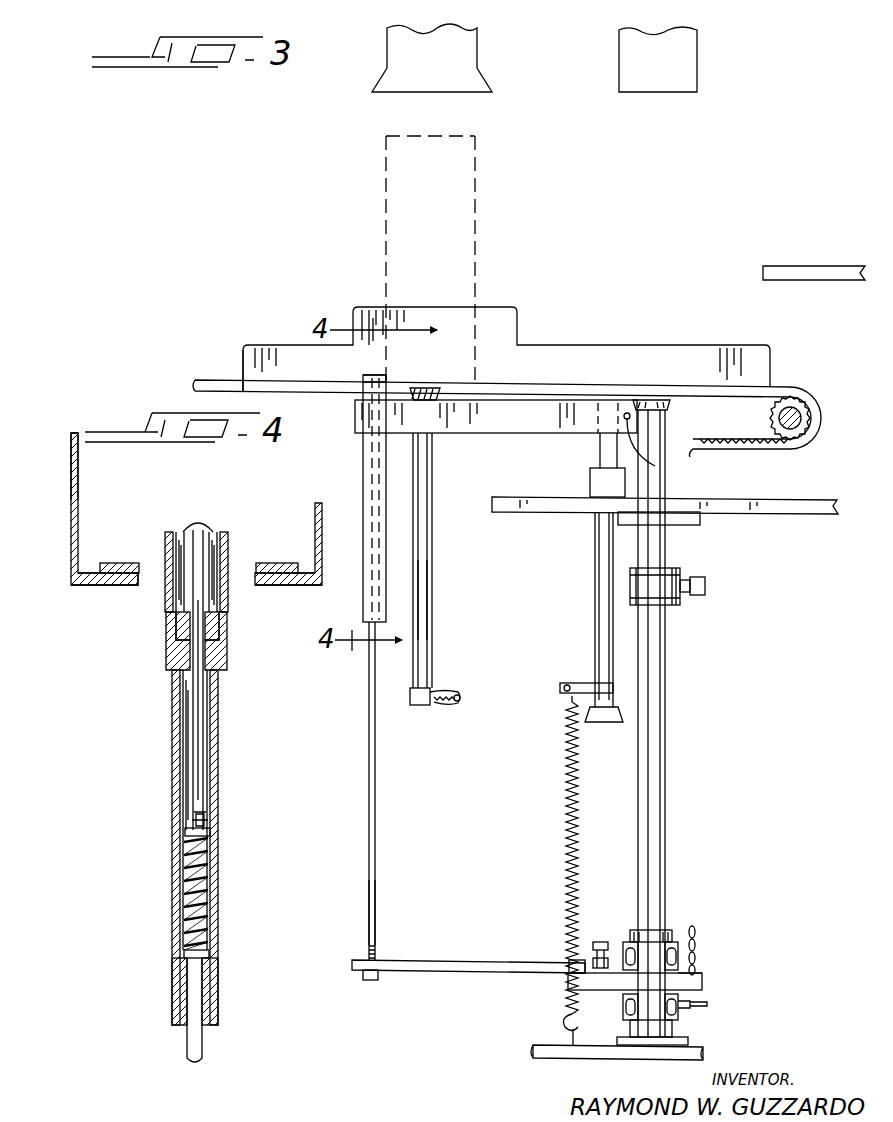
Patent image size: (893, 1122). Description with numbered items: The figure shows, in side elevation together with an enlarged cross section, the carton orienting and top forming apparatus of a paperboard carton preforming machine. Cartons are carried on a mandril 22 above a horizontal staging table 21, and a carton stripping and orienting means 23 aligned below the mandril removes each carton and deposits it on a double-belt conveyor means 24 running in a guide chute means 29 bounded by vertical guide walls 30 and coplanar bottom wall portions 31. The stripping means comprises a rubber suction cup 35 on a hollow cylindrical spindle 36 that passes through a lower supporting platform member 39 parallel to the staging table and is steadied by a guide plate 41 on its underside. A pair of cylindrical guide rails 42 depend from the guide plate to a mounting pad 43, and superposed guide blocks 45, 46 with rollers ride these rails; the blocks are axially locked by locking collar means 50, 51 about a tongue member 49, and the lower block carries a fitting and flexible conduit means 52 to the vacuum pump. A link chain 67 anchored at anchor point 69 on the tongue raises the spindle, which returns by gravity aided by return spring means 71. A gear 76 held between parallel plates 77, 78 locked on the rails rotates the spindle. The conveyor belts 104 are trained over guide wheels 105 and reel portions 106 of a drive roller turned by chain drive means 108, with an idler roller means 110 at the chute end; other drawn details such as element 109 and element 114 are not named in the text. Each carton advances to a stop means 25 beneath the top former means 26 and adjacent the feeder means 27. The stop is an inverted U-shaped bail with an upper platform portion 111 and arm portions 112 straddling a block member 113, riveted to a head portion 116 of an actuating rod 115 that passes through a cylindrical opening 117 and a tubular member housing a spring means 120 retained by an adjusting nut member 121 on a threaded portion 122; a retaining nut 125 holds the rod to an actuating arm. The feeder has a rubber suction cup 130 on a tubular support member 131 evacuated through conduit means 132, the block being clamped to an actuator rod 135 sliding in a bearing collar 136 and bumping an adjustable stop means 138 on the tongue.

In FIG. 3, the horizontal staging table 21 is at (780, 266).
In FIG. 3, the carton supporting mandril 22 is at (703, 70).
In FIG. 3, the carton stripping and orienting means 23 is at (670, 437).
In FIG. 3, the double-belt conveyor means 24 is at (812, 375).
In FIG. 3, the stop means 25 is at (388, 382).
In FIG. 4, the stop means 25 is at (163, 523).
In FIG. 3, the top former means 26 is at (483, 50).
In FIG. 3, the feeder means 27 is at (435, 487).
In FIG. 3, the guide chute means 29 is at (553, 346).
In FIG. 4, the guide chute means 29 is at (66, 467).
In FIG. 3, the guide rail or wall 30 is at (653, 360).
In FIG. 4, the guide rail or wall 30 is at (78, 500).
In FIG. 4, the bottom wall portion 31 is at (85, 583).
In FIG. 3, the rubber suction cup 35 is at (652, 402).
In FIG. 3, the cylindrical spindle 36 is at (650, 550).
In FIG. 3, the lower supporting platform member 39 is at (758, 497).
In FIG. 3, the guide plate 41 is at (690, 521).
In FIG. 3, the guide rail 42 is at (650, 693).
In FIG. 3, the mounting pad 43 is at (705, 1051).
In FIG. 3, the upper guide block 45 is at (678, 942).
In FIG. 3, the lower guide block 46 is at (627, 1003).
In FIG. 3, the tongue member 49 is at (703, 987).
In FIG. 3, the locking collar means 50 is at (667, 935).
In FIG. 3, the locking collar means 51 is at (672, 1037).
In FIG. 3, the fitting and flexible conduit means 52 is at (708, 1005).
In FIG. 3, the link chain 67 is at (697, 948).
In FIG. 3, the chain anchor point 69 is at (700, 973).
In FIG. 3, the return spring means 71 is at (565, 775).
In FIG. 3, the gear 76 is at (690, 598).
In FIG. 3, the plate 77 is at (690, 570).
In FIG. 3, the plate 78 is at (680, 597).
In FIG. 4, the belt 104 is at (118, 562).
In FIG. 3, the guide wheel 105 is at (364, 395).
In FIG. 4, the reel portion 106 is at (221, 535).
In FIG. 3, the chain drive means 108 is at (512, 431).
In FIG. 4, the chain drive means 108 is at (222, 656).
In FIG. 3, the plunger rod 109 is at (378, 775).
In FIG. 4, the plunger rod 109 is at (190, 600).
In FIG. 3, the idler roller means 110 is at (365, 378).
In FIG. 4, the idler roller means 110 is at (200, 521).
In FIG. 4, the upper platform portion 111 is at (222, 748).
In FIG. 4, the arm portion 112 is at (225, 638).
In FIG. 4, the block member 113 is at (205, 717).
In FIG. 4, the spring 114 is at (208, 872).
In FIG. 4, the actuating rod 115 is at (210, 960).
In FIG. 4, the head portion 116 is at (210, 833).
In FIG. 4, the cylindrical opening 117 is at (205, 818).
In FIG. 3, the spring means 120 is at (375, 897).
In FIG. 4, the spring means 120 is at (215, 1005).
In FIG. 3, the adjusting nut member 121 is at (430, 960).
In FIG. 3, the threaded portion 122 is at (370, 981).
In FIG. 3, the retaining nut 125 is at (573, 962).
In FIG. 3, the rubber suction cup 130 is at (438, 392).
In FIG. 3, the tubular support member 131 is at (445, 560).
In FIG. 3, the conduit means 132 is at (445, 690).
In FIG. 3, the actuator rod 135 is at (597, 540).
In FIG. 3, the bearing collar 136 is at (592, 748).
In FIG. 3, the adjustable stop means 138 is at (600, 940).